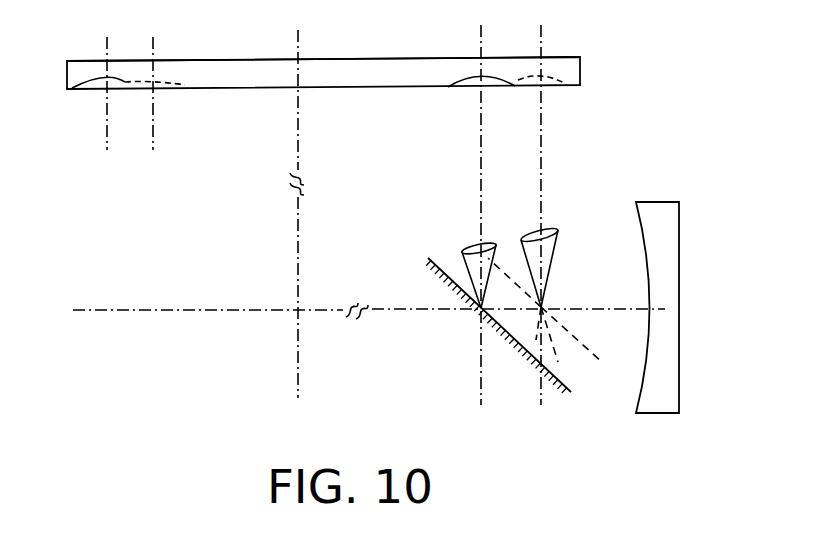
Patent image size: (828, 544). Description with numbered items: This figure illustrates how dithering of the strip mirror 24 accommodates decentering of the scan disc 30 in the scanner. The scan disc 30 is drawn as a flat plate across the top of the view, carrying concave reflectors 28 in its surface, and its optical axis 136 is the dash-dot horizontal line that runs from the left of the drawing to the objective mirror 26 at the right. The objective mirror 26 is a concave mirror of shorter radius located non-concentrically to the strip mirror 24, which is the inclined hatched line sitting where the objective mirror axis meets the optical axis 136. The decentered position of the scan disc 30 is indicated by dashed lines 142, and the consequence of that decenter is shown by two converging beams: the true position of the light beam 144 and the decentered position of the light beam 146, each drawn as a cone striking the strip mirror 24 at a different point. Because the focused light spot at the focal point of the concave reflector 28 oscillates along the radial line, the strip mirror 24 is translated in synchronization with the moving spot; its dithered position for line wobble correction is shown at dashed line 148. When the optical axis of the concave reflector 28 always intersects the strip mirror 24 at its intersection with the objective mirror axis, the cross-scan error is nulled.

The strip mirror 24 is at (480, 310).
The objective mirror 26 is at (680, 393).
The concave reflector 28 is at (90, 87).
The scan disc 30 is at (66, 62).
The optical axis 136 is at (122, 304).
The decentered position of the scan disc 142 is at (352, 69).
The true position of the light beam 144 is at (477, 208).
The decentered position of the light beam 146 is at (545, 165).
The dithered position of the strip mirror 148 is at (580, 347).